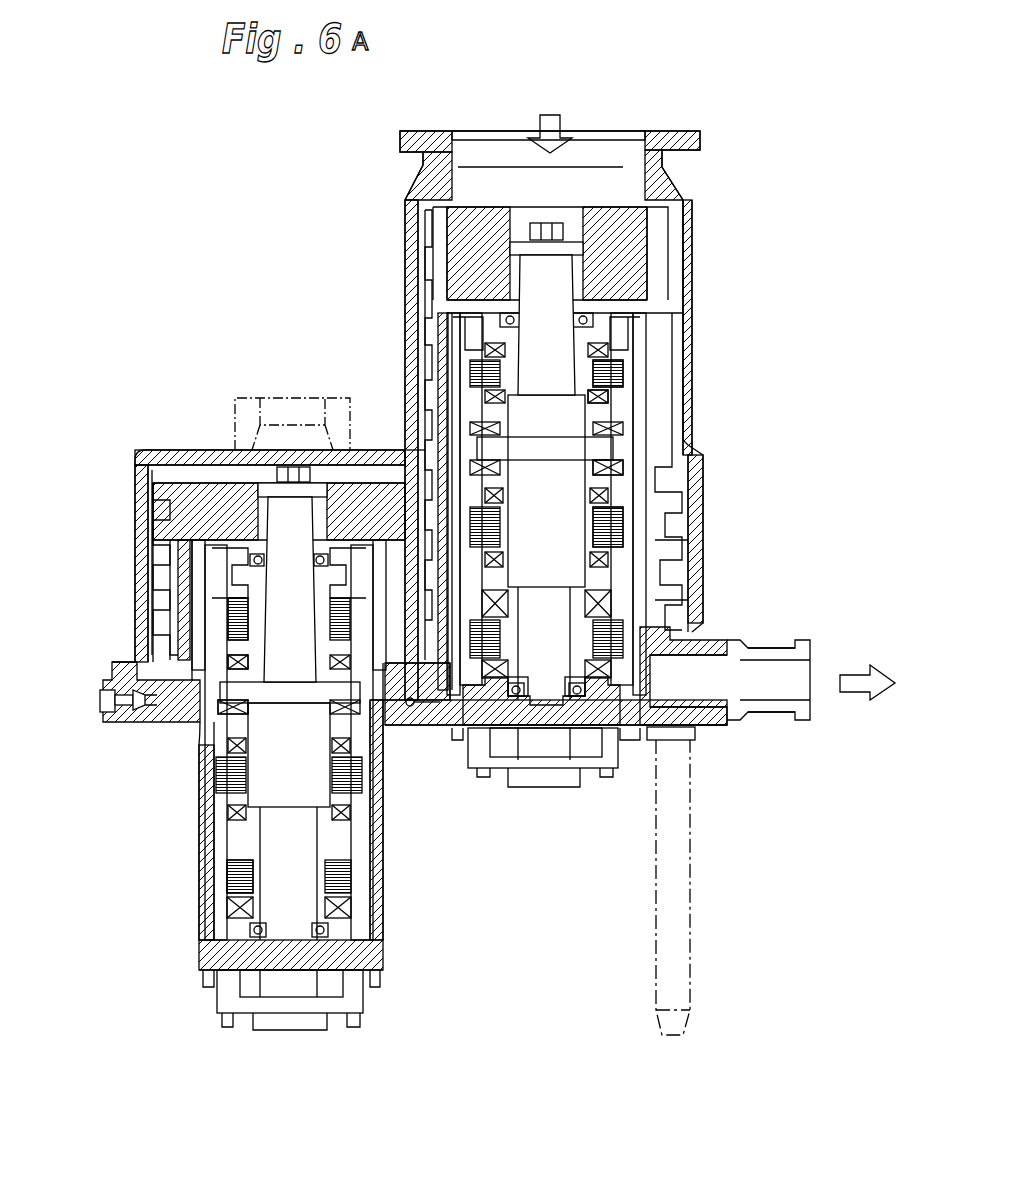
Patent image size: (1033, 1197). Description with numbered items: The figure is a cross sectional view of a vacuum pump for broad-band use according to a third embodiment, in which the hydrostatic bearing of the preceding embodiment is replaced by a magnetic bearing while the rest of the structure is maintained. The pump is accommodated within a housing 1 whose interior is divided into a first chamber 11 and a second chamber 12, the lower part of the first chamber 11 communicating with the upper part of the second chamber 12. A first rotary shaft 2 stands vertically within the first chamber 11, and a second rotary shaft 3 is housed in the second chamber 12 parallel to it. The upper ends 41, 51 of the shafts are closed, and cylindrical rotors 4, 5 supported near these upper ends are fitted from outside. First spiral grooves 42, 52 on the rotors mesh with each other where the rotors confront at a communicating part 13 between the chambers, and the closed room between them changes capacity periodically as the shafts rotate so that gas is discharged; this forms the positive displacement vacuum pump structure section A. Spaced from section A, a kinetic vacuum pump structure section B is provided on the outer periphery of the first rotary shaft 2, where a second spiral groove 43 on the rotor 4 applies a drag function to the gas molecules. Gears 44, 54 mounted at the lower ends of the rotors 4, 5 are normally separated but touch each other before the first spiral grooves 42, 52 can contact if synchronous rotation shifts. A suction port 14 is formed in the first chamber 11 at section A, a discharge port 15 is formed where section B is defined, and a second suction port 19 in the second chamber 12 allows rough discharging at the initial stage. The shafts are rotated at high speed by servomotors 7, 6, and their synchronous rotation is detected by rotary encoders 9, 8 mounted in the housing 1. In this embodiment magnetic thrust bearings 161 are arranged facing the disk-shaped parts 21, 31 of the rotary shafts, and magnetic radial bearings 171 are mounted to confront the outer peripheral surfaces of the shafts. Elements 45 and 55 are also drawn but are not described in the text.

The housing 1 is at (405, 270).
The first rotary shaft 2 is at (562, 490).
The second rotary shaft 3 is at (306, 789).
The rotor 4 is at (665, 385).
The rotor 5 is at (137, 557).
The servomotor 6 is at (217, 780).
The servomotor 7 is at (620, 630).
The rotary encoder 8 is at (325, 987).
The rotary encoder 9 is at (582, 740).
The first chamber 11 is at (620, 170).
The second chamber 12 is at (180, 467).
The communicating part 13 is at (410, 672).
The suction port 14 is at (610, 133).
The discharge port 15 is at (760, 690).
The second suction port 19 is at (305, 405).
The disk-shaped part 21 is at (620, 445).
The disk-shaped part 31 is at (123, 732).
The upper end 41 is at (615, 245).
The first spiral groove 42 is at (670, 585).
The second spiral groove 43 is at (430, 258).
The gear 44 is at (672, 700).
The stator frame 45 is at (645, 310).
The upper end 51 is at (215, 495).
The first spiral groove 52 is at (147, 597).
The gear 54 is at (153, 655).
The cover wall 55 is at (140, 453).
The magnetic thrust bearing 161 is at (655, 405).
The magnetic radial bearing 171 is at (618, 340).
The positive displacement vacuum pump structure section A is at (404, 449).
The kinetic vacuum pump structure section B is at (432, 369).